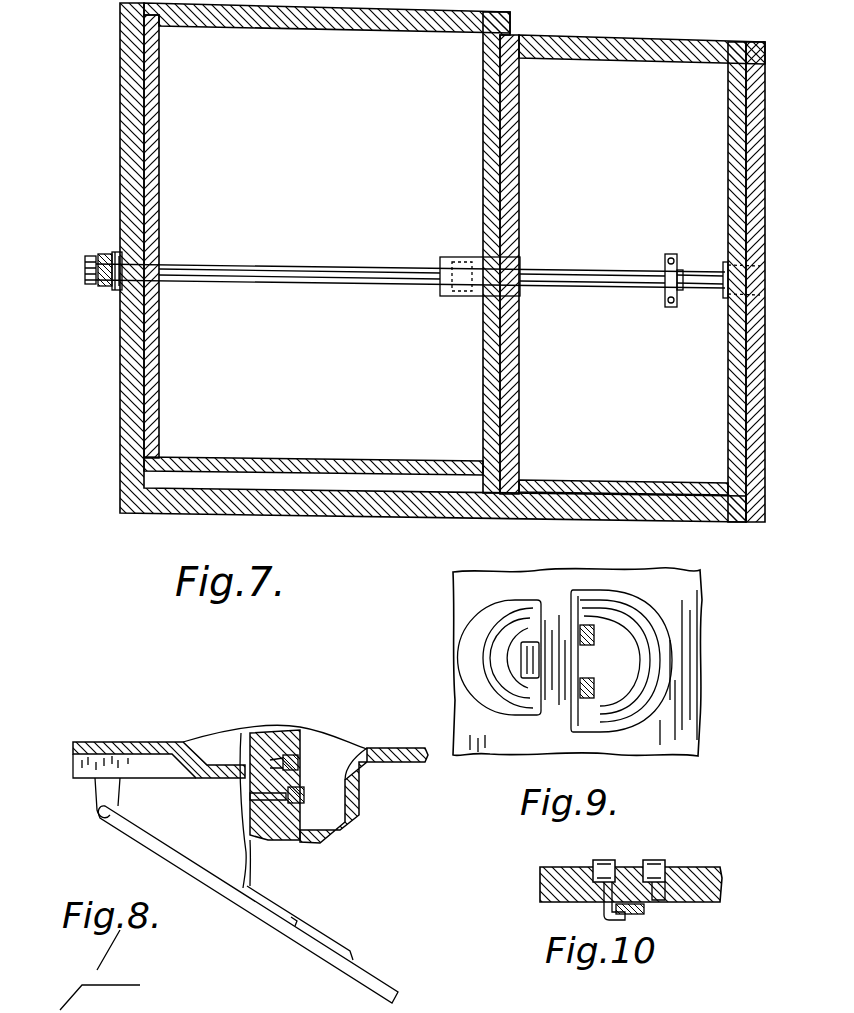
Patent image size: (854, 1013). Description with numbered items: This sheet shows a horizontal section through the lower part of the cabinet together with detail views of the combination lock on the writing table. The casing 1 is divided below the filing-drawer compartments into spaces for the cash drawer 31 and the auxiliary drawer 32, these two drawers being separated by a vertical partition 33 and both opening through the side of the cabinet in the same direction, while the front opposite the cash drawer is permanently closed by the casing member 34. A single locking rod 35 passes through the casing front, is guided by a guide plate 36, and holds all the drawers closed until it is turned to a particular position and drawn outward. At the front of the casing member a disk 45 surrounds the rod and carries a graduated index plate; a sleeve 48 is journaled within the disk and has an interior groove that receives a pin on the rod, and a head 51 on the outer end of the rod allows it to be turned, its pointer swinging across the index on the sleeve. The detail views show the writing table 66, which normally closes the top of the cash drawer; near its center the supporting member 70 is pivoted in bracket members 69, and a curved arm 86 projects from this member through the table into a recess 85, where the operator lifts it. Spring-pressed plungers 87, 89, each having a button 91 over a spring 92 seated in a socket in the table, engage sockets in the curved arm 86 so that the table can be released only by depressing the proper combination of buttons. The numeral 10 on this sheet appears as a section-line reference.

In FIG. 7, the casing 1 is at (383, 553).
In FIG. 7, the cash drawer 31 is at (158, 207).
In FIG. 7, the auxiliary drawer 32 is at (523, 204).
In FIG. 7, the vertical partition 33 is at (504, 401).
In FIG. 7, the casing member 34 is at (121, 396).
In FIG. 7, the locking rod 35 is at (322, 279).
In FIG. 7, the guide plate 36 is at (666, 299).
In FIG. 7, the disk 45 is at (116, 292).
In FIG. 7, the sleeve 48 is at (104, 288).
In FIG. 7, the head 51 is at (86, 273).
In FIG. 8, the writing table 66 is at (108, 750).
In FIG. 9, the writing table 66 is at (577, 662).
In FIG. 10, the writing table 66 is at (540, 882).
In FIG. 8, the bracket members 69 is at (101, 790).
In FIG. 8, the supporting member 70 is at (366, 982).
In FIG. 8, the recess 85 is at (208, 746).
In FIG. 9, the recess 85 is at (478, 625).
In FIG. 8, the curved arm 86 is at (258, 852).
In FIG. 9, the curved arm 86 is at (522, 674).
In FIG. 10, the curved arm 86 is at (645, 911).
In FIG. 8, the spring-pressed plunger 87 is at (277, 745).
In FIG. 10, the spring-pressed plunger 87 is at (690, 904).
In FIG. 8, the spring-pressed plunger 89 is at (252, 800).
In FIG. 10, the spring-pressed plunger 89 is at (604, 905).
In FIG. 8, the button 91 is at (305, 795).
In FIG. 9, the button 91 is at (594, 686).
In FIG. 10, the button 91 is at (651, 861).
In FIG. 8, the spring 92 is at (298, 769).
In FIG. 10, the spring 92 is at (591, 866).
In FIG. 8, the weighted tail piece 10 is at (163, 791).